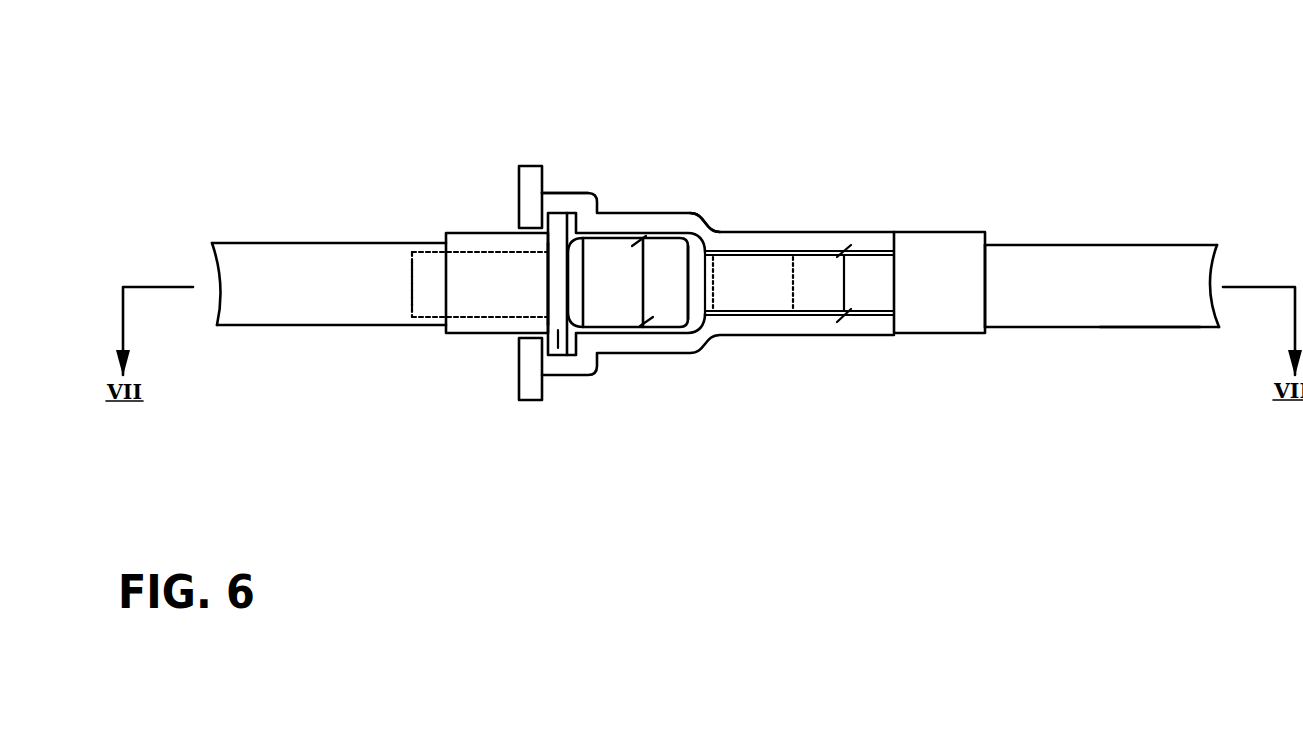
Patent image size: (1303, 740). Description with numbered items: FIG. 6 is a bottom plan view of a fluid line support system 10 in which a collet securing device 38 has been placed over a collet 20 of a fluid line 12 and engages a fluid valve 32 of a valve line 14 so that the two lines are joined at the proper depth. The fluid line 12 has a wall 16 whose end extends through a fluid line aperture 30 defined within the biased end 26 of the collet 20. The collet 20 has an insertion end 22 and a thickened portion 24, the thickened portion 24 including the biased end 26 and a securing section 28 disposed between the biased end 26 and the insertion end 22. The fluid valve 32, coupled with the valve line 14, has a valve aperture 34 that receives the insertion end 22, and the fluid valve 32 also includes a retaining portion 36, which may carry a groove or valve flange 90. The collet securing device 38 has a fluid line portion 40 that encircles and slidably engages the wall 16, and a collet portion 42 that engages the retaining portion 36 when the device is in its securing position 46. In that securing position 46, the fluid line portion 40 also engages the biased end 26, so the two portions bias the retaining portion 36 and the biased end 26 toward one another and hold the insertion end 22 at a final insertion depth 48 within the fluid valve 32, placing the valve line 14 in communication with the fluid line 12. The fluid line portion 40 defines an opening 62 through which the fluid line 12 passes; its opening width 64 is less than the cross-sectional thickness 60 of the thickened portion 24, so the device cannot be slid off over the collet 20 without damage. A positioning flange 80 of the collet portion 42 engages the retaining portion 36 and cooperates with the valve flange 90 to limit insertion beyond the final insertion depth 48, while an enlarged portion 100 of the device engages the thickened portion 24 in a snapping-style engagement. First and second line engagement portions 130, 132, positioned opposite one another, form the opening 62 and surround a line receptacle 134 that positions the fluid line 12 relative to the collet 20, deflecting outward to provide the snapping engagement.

The fluid line support system 10 is at (650, 124).
The fluid line 12 is at (1091, 242).
The valve line 14 is at (291, 241).
The wall 16 is at (1131, 310).
The collet 20 is at (621, 211).
The insertion end 22 is at (410, 298).
The thickened portion 24 is at (612, 305).
The biased end 26 is at (696, 300).
The securing section 28 is at (578, 312).
The fluid line aperture 30 is at (706, 277).
The fluid valve 32 is at (479, 231).
The valve aperture 34 is at (553, 268).
The retaining portion 36 is at (536, 323).
The collet securing device 38 is at (859, 411).
The fluid line portion 40 is at (969, 224).
The collet portion 42 is at (509, 378).
The securing position 46 is at (889, 353).
The final insertion depth 48 is at (410, 272).
The cross-sectional thickness 60 is at (644, 287).
The opening 62 is at (888, 283).
The opening width 64 is at (846, 278).
The positioning flange 80 is at (518, 202).
The valve flange 90 is at (558, 340).
The enlarged portion 100 is at (667, 212).
The first line engagement portion 130 is at (968, 303).
The second line engagement portion 132 is at (768, 294).
The line receptacle 134 is at (764, 276).